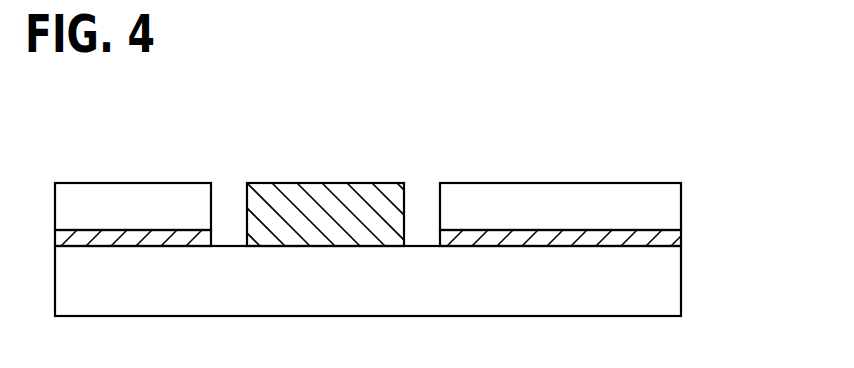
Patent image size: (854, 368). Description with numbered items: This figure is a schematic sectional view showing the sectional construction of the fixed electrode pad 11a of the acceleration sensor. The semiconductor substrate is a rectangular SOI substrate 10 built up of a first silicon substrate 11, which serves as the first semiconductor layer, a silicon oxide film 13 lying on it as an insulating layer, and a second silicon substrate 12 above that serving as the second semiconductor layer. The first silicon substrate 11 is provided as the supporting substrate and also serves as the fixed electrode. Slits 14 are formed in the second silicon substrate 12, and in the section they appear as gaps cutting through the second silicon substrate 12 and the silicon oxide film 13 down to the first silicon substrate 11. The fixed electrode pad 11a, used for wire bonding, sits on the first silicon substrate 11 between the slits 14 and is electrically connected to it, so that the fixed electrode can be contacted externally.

The SOI substrate 10 is at (427, 249).
The first silicon substrate 11 is at (663, 278).
The fixed electrode pad 11a is at (339, 187).
The second silicon substrate 12 is at (400, 206).
The silicon oxide film 13 is at (668, 242).
The slits 14 is at (423, 195).